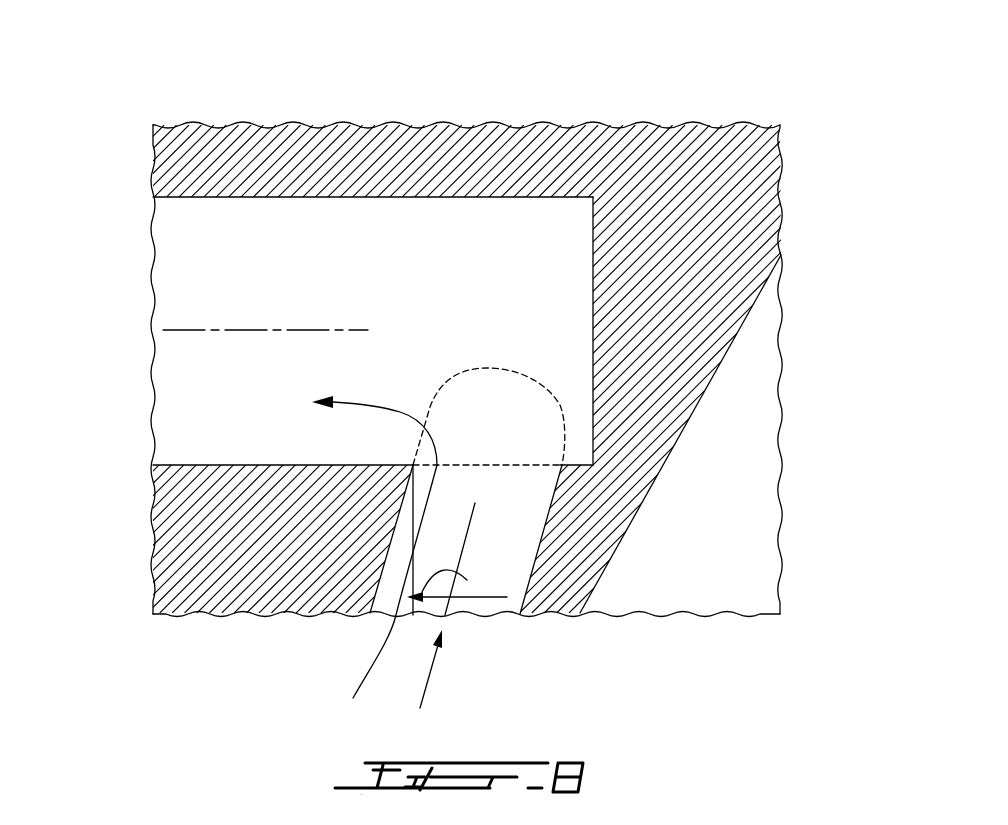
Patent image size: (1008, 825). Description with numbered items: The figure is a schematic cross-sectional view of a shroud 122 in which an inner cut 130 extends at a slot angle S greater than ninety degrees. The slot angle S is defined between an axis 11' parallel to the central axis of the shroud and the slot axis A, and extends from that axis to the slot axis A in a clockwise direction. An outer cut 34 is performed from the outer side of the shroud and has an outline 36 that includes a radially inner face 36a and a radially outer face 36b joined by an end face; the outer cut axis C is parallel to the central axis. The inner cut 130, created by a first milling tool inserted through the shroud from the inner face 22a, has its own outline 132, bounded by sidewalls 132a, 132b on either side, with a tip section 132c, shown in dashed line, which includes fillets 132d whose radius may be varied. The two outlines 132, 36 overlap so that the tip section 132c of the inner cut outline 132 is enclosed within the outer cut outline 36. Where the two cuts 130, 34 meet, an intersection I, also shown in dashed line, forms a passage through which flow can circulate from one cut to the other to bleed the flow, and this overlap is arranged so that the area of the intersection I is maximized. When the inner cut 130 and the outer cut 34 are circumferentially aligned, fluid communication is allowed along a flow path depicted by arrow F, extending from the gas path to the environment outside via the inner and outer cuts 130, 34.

The shroud 122 is at (678, 110).
The radially outer face 36b is at (505, 196).
The outline of the outer cut 36 is at (594, 270).
The radially inner face 36a is at (191, 467).
The outer cut 34 is at (192, 392).
The inner face 22a is at (660, 477).
The outline of the inner cut 132 is at (393, 530).
The first sidewall of groove 132a is at (525, 592).
The second sidewall of groove 132b is at (381, 577).
The tip section 132c is at (523, 372).
The fillets 132d is at (462, 368).
The inner cut 130 is at (382, 598).
The outer cut axis C is at (229, 329).
The flow path arrow F is at (375, 410).
The slot axis A is at (468, 532).
The slot angle S is at (433, 571).
The direction B is at (428, 677).
The intersection I is at (513, 489).
The axis parallel to the central axis 11' is at (497, 576).